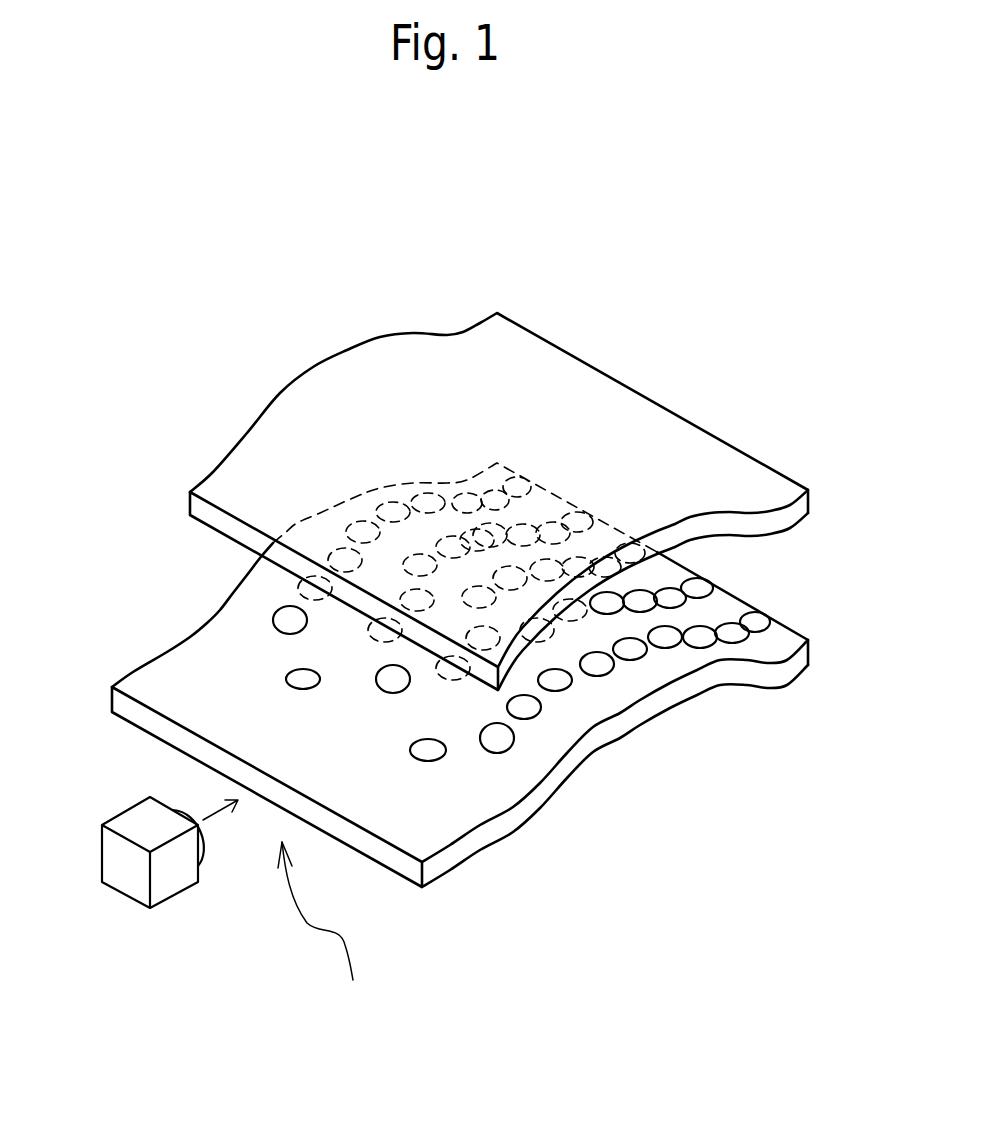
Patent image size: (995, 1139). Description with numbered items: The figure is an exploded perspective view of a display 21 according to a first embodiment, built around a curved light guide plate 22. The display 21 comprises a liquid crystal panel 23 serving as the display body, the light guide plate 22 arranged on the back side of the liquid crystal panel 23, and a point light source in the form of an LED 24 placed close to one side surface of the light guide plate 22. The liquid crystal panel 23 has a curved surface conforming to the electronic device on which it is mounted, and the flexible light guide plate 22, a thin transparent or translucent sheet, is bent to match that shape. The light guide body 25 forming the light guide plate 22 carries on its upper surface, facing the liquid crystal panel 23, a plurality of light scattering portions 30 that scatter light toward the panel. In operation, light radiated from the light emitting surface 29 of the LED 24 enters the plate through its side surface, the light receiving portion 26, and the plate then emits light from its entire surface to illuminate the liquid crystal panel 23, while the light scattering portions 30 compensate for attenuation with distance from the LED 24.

The display 21 is at (464, 667).
The light guide plate 22 is at (494, 675).
The liquid crystal panel 23 is at (605, 385).
The LED 24 is at (186, 897).
The light guide body 25 is at (788, 632).
The light receiving portion 26 is at (330, 931).
The light emitting surface 29 is at (207, 842).
The light scattering portions 30 is at (495, 743).